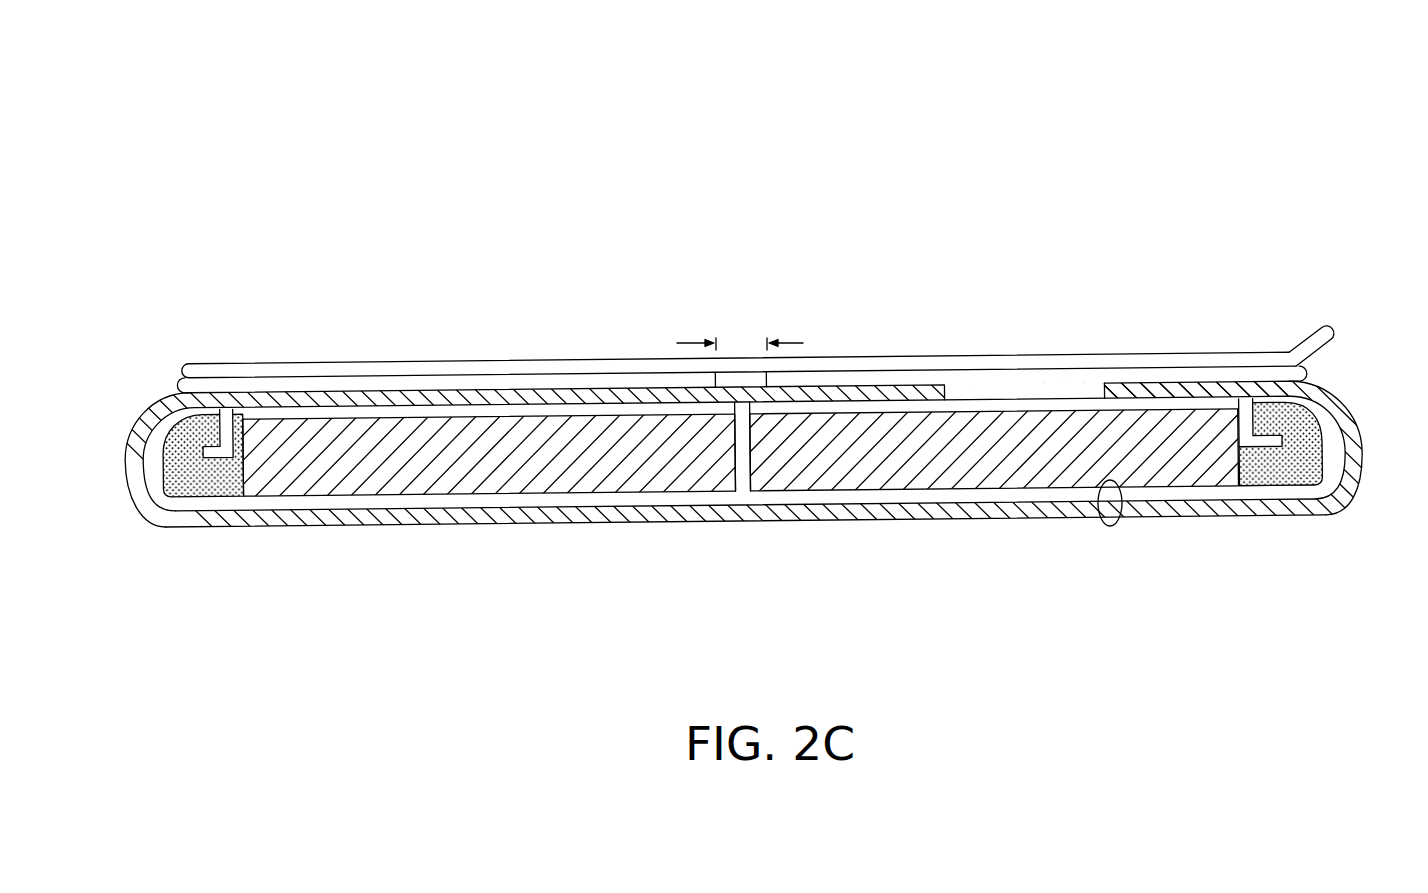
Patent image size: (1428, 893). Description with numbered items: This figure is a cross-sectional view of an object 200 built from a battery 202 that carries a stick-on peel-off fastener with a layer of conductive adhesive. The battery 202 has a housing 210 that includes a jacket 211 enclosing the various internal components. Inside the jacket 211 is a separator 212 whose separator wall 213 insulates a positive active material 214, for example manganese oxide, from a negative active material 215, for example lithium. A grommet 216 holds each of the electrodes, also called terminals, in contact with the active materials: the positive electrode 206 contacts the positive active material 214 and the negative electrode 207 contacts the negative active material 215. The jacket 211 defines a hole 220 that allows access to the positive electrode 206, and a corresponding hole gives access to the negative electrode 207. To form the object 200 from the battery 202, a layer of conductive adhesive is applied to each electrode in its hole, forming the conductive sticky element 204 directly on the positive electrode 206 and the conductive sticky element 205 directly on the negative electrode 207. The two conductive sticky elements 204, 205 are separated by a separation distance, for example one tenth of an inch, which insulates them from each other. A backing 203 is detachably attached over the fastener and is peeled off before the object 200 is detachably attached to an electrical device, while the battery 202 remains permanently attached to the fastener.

The object 200 is at (663, 158).
The battery 202 is at (583, 512).
The backing 203 is at (182, 369).
The conductive sticky element 204 is at (1308, 375).
The conductive sticky element 205 is at (193, 388).
The positive electrode 206 is at (1135, 405).
The negative electrode 207 is at (377, 408).
The housing 210 is at (1108, 528).
The jacket 211 is at (363, 518).
The separator 212 is at (218, 500).
The separator wall 213 is at (743, 413).
The positive active material 214 is at (1068, 472).
The negative active material 215 is at (512, 484).
The grommet 216 is at (213, 408).
The hole 220 is at (1002, 392).